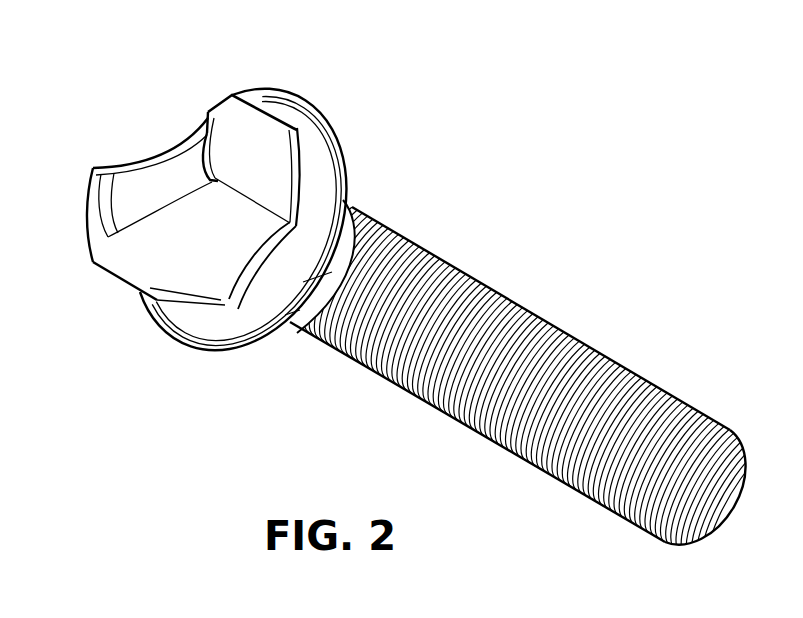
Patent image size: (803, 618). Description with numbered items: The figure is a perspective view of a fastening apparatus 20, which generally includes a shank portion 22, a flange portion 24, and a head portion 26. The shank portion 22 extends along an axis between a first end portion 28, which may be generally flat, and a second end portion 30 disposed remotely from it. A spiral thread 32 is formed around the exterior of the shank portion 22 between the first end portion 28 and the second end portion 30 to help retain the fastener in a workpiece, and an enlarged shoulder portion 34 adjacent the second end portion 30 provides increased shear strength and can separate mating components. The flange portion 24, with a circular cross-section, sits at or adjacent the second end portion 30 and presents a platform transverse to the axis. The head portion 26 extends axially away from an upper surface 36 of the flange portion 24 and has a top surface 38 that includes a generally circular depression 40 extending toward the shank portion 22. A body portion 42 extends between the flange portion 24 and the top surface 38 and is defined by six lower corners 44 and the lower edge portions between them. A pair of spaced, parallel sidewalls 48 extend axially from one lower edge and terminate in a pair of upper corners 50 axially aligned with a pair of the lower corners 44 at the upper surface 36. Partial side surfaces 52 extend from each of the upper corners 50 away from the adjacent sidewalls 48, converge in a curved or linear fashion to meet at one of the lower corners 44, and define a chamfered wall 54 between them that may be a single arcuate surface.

The fastening apparatus 20 is at (558, 267).
The shank portion 22 is at (635, 397).
The flange portion 24 is at (193, 353).
The head portion 26 is at (232, 95).
The first end portion 28 is at (703, 530).
The second end portion 30 is at (307, 310).
The spiral thread 32 is at (585, 463).
The enlarged shoulder portion 34 is at (352, 205).
The upper surface 36 is at (310, 123).
The top surface 38 is at (93, 235).
The depression 40 is at (175, 168).
The body portion 42 is at (118, 277).
The lower corners 44 is at (227, 307).
The sidewalls 48 is at (262, 122).
The upper corners 50 is at (173, 170).
The partial side surfaces 52 is at (233, 207).
The chamfered wall 54 is at (200, 258).